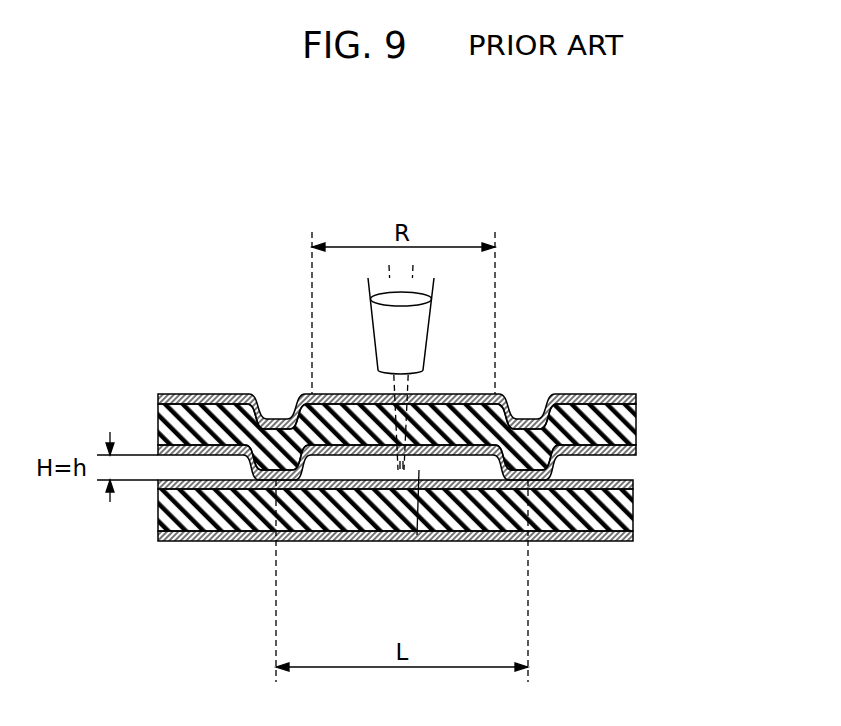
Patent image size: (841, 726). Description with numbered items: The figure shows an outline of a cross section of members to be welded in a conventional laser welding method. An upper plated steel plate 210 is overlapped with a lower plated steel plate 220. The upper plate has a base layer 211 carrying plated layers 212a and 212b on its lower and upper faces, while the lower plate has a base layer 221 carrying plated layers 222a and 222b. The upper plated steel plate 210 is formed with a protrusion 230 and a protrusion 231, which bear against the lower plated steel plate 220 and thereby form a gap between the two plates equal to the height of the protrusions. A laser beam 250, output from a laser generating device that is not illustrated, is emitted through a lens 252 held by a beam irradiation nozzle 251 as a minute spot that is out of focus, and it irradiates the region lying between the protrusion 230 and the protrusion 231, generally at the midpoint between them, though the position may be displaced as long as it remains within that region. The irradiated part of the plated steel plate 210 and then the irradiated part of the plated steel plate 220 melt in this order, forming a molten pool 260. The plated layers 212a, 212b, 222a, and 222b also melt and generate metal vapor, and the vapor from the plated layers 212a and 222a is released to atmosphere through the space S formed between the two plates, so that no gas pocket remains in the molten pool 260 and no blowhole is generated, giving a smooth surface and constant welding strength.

The plated steel plate 210 is at (483, 426).
The core layer of upper member 211 is at (636, 428).
The plated layer 212a is at (636, 450).
The plated layer 212b is at (636, 398).
The plated steel plate 220 is at (483, 520).
The core layer of lower member 221 is at (633, 512).
The plated layer 222a is at (633, 483).
The plated layer 222b is at (633, 533).
The protrusion 230 is at (228, 452).
The protrusion 231 is at (551, 420).
The laser beam 250 is at (407, 388).
The beam irradiation nozzle 251 is at (375, 332).
The lens 252 is at (377, 297).
The molten pool 260 is at (382, 470).
The space S is at (442, 470).